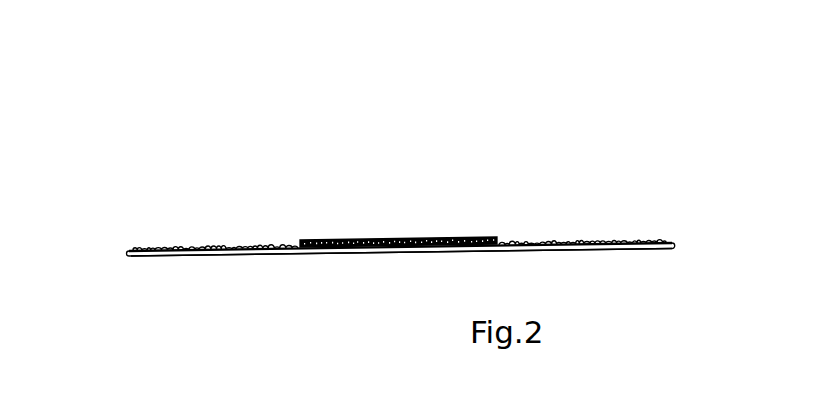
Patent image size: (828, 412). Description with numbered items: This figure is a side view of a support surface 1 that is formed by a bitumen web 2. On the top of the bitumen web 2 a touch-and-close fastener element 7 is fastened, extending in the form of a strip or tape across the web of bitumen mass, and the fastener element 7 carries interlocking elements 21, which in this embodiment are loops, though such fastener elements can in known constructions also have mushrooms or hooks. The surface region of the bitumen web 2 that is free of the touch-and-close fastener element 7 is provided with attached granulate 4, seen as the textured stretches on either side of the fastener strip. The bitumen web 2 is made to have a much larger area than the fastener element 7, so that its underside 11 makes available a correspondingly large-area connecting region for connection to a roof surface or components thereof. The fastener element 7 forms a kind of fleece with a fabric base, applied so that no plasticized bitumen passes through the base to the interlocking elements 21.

The support surface 1 is at (173, 160).
The bitumen web 2 is at (173, 258).
The granulate 4 is at (207, 248).
The touch-and-close fastener element 7 is at (496, 238).
The underside 11 is at (608, 252).
The interlocking elements 21 is at (393, 238).